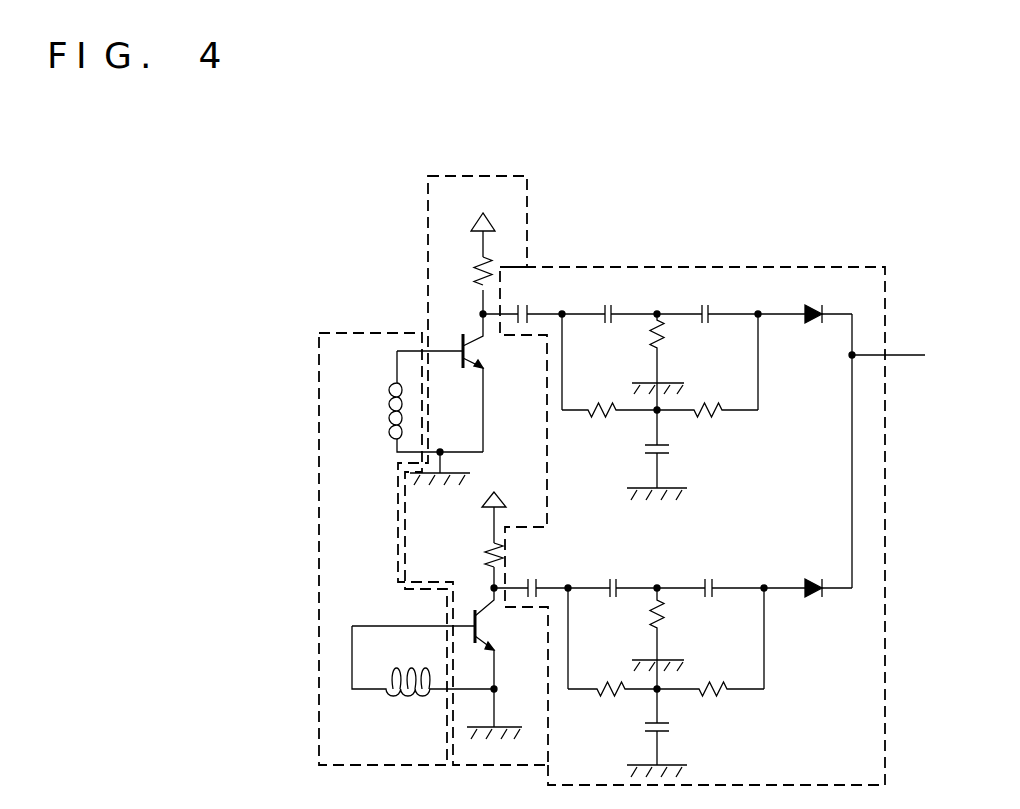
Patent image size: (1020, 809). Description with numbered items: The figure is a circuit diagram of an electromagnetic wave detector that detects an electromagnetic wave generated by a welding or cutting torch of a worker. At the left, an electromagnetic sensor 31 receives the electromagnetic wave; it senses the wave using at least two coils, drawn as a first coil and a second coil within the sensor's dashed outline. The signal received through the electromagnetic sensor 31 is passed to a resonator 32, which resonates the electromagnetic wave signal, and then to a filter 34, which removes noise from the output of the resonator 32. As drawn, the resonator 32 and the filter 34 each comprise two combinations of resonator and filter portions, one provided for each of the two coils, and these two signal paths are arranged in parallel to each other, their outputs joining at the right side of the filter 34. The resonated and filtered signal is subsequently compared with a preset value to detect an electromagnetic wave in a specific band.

The electromagnetic sensor 31 is at (344, 346).
The resonator 32 is at (527, 216).
The filter 34 is at (759, 268).